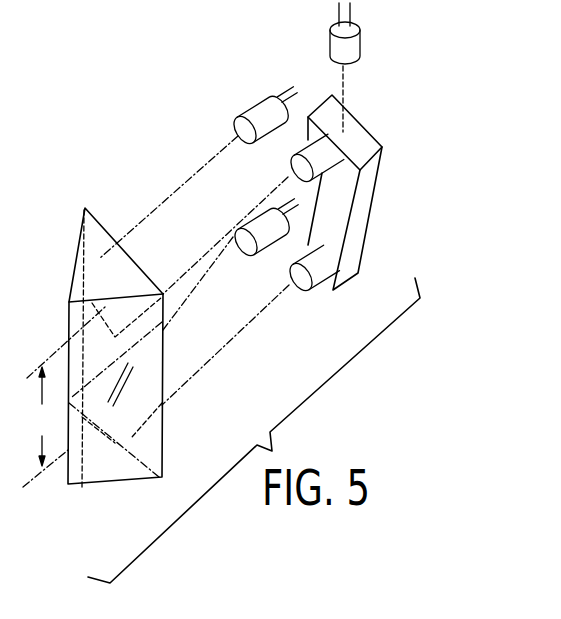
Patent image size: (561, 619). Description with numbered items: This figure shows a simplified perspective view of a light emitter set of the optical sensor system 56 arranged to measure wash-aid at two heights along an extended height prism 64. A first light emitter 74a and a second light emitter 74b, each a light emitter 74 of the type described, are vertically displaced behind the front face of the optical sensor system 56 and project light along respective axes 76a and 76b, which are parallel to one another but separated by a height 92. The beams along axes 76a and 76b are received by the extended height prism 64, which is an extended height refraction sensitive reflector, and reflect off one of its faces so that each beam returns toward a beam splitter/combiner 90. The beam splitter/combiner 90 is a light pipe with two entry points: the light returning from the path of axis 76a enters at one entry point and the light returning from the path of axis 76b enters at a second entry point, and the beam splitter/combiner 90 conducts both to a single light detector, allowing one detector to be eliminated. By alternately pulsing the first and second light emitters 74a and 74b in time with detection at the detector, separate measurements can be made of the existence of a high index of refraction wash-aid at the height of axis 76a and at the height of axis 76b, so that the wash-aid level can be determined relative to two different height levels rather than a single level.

The optical sensor system 56 is at (208, 45).
The prism 64 is at (93, 465).
The light emitter 74 is at (363, 36).
The first light emitter 74a is at (252, 112).
The second light emitter 74b is at (257, 210).
The axis 76a is at (167, 205).
The axis 76b is at (190, 292).
The beam splitter/combiner 90 is at (377, 198).
The height 92 is at (64, 397).